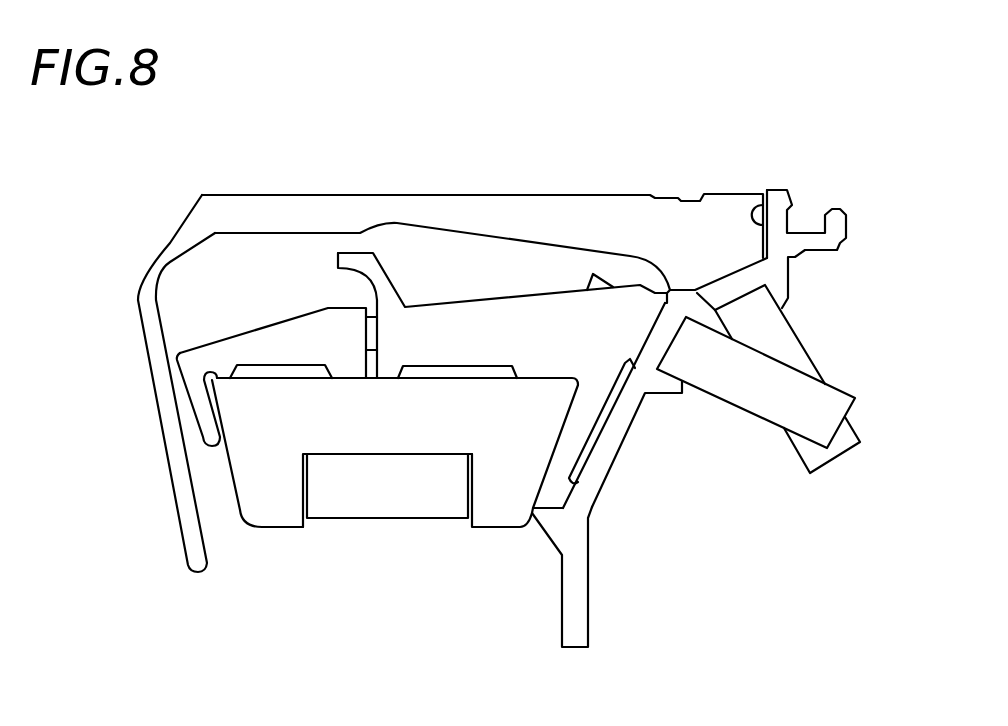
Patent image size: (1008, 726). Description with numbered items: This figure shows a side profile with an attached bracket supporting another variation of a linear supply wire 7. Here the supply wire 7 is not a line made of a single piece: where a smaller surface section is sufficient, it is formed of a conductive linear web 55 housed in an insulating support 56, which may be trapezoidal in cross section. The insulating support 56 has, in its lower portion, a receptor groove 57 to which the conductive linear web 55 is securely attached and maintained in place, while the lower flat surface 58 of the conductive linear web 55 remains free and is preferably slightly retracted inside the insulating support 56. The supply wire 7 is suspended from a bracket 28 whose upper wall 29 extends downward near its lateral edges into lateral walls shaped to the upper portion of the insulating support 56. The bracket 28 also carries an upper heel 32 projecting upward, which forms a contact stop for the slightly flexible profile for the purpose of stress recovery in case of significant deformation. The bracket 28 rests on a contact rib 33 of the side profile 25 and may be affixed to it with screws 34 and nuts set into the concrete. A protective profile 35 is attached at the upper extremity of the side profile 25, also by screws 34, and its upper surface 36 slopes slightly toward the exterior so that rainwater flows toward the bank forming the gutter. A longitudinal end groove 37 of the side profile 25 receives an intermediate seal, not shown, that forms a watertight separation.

The supply wire 7 is at (395, 510).
The side profile 25 is at (600, 612).
The bracket 28 is at (245, 322).
The upper wall 29 is at (530, 293).
The upper heel 32 is at (358, 262).
The contact rib 33 is at (547, 525).
The screws 34 is at (773, 328).
The protective profile 35 is at (173, 218).
The upper surface 36 is at (465, 193).
The longitudinal end groove 37 is at (815, 198).
The conductive linear web 55 is at (438, 526).
The insulating support 56 is at (257, 488).
The receptor groove 57 is at (315, 457).
The lower flat surface 58 is at (438, 500).